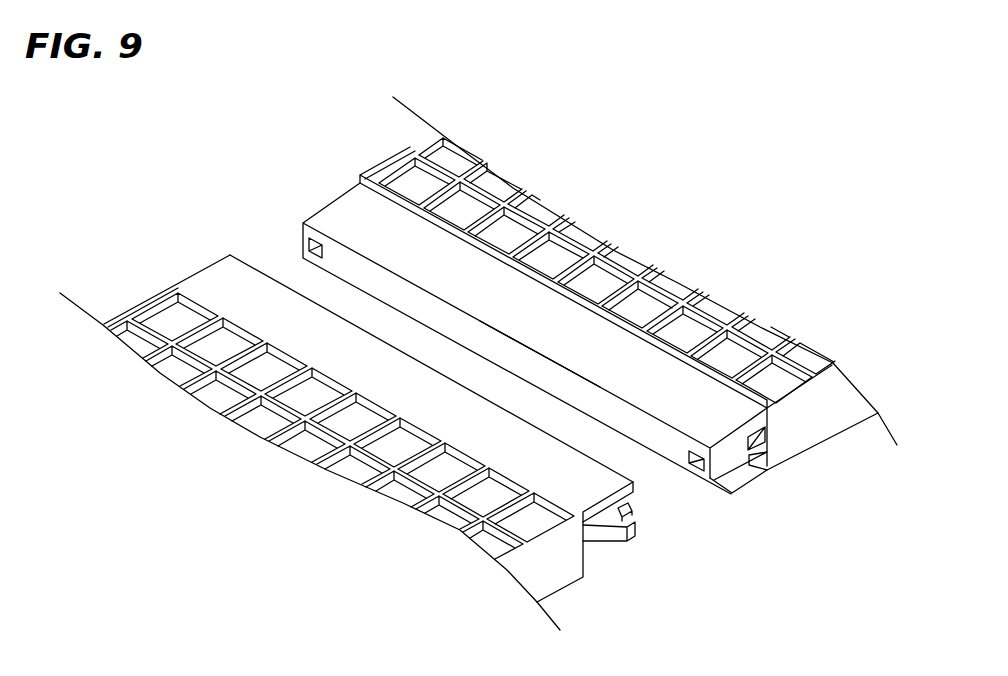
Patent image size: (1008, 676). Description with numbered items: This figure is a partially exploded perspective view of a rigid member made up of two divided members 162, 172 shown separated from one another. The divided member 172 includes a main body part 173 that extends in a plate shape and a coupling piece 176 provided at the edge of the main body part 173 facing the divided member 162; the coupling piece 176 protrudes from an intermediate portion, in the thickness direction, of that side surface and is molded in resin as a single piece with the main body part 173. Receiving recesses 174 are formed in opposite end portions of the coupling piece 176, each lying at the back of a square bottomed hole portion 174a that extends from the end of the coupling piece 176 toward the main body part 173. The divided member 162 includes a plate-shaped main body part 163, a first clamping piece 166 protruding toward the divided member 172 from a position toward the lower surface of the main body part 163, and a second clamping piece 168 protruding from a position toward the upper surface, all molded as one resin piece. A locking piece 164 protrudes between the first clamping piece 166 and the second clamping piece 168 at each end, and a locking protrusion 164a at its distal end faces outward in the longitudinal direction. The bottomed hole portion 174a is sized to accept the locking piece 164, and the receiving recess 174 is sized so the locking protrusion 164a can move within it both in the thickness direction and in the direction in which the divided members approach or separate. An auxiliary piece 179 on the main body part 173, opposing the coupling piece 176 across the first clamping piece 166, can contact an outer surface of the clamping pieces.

The divided member 162 is at (194, 258).
The main body part 163 is at (553, 575).
The locking piece 164 is at (633, 535).
The locking protrusion 164a is at (636, 516).
The first clamping piece 166 is at (608, 553).
The second clamping piece 168 is at (421, 362).
The divided member 172 is at (499, 143).
The main body part 173 is at (843, 393).
The receiving recess 174 is at (768, 432).
The bottomed hole portion 174a is at (686, 452).
The coupling piece 176 is at (538, 376).
The auxiliary piece 179 is at (750, 484).